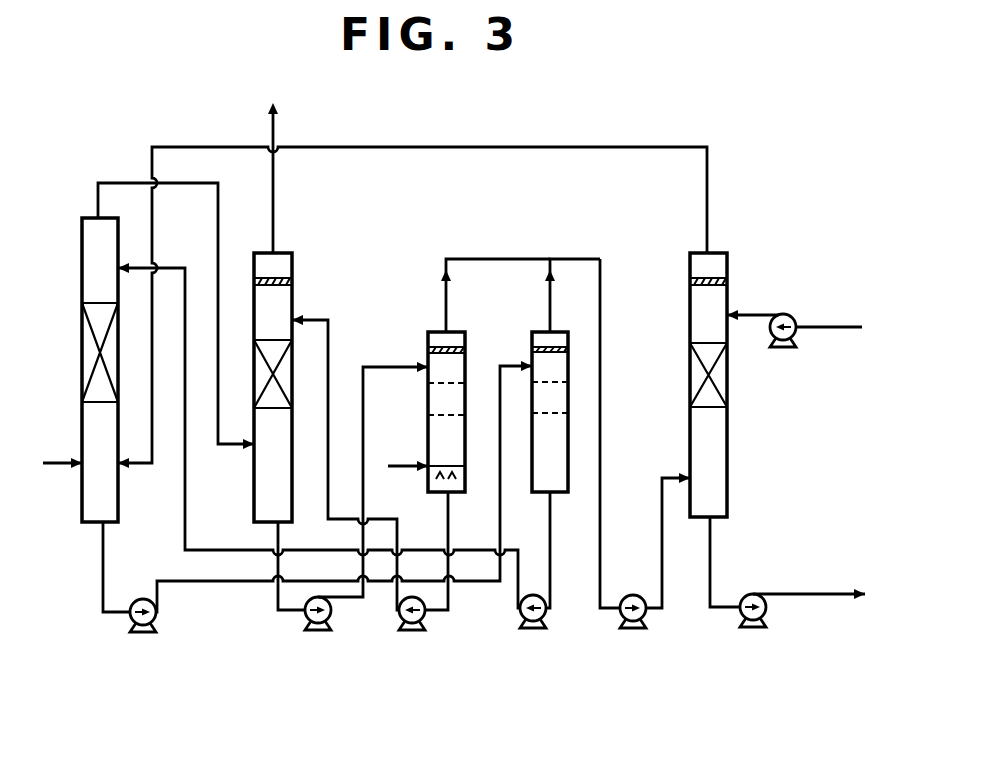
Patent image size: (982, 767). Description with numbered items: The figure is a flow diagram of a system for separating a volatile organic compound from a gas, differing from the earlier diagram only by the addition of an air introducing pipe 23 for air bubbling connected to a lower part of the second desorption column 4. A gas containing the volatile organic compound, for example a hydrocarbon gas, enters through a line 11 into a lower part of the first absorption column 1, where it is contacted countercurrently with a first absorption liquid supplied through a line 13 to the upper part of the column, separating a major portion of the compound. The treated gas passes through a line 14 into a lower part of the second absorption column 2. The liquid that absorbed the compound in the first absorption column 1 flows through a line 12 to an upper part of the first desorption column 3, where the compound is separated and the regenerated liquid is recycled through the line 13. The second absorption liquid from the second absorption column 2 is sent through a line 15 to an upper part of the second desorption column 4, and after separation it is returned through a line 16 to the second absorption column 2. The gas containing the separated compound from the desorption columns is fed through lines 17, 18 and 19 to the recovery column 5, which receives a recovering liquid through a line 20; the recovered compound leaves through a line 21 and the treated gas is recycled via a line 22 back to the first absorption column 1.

The first absorption column 1 is at (88, 358).
The second absorption column 2 is at (285, 372).
The first desorption column 3 is at (558, 395).
The second desorption column 4 is at (457, 402).
The recovery column 5 is at (718, 373).
The line 11 is at (50, 463).
The line 12 is at (103, 573).
The line 13 is at (193, 468).
The line 14 is at (127, 183).
The line 15 is at (390, 365).
The line 16 is at (320, 320).
The line 17 is at (445, 300).
The line 18 is at (550, 308).
The line 19 is at (600, 307).
The line 20 is at (752, 313).
The line 21 is at (790, 593).
The line 22 is at (557, 147).
The air introducing pipe 23 is at (408, 466).